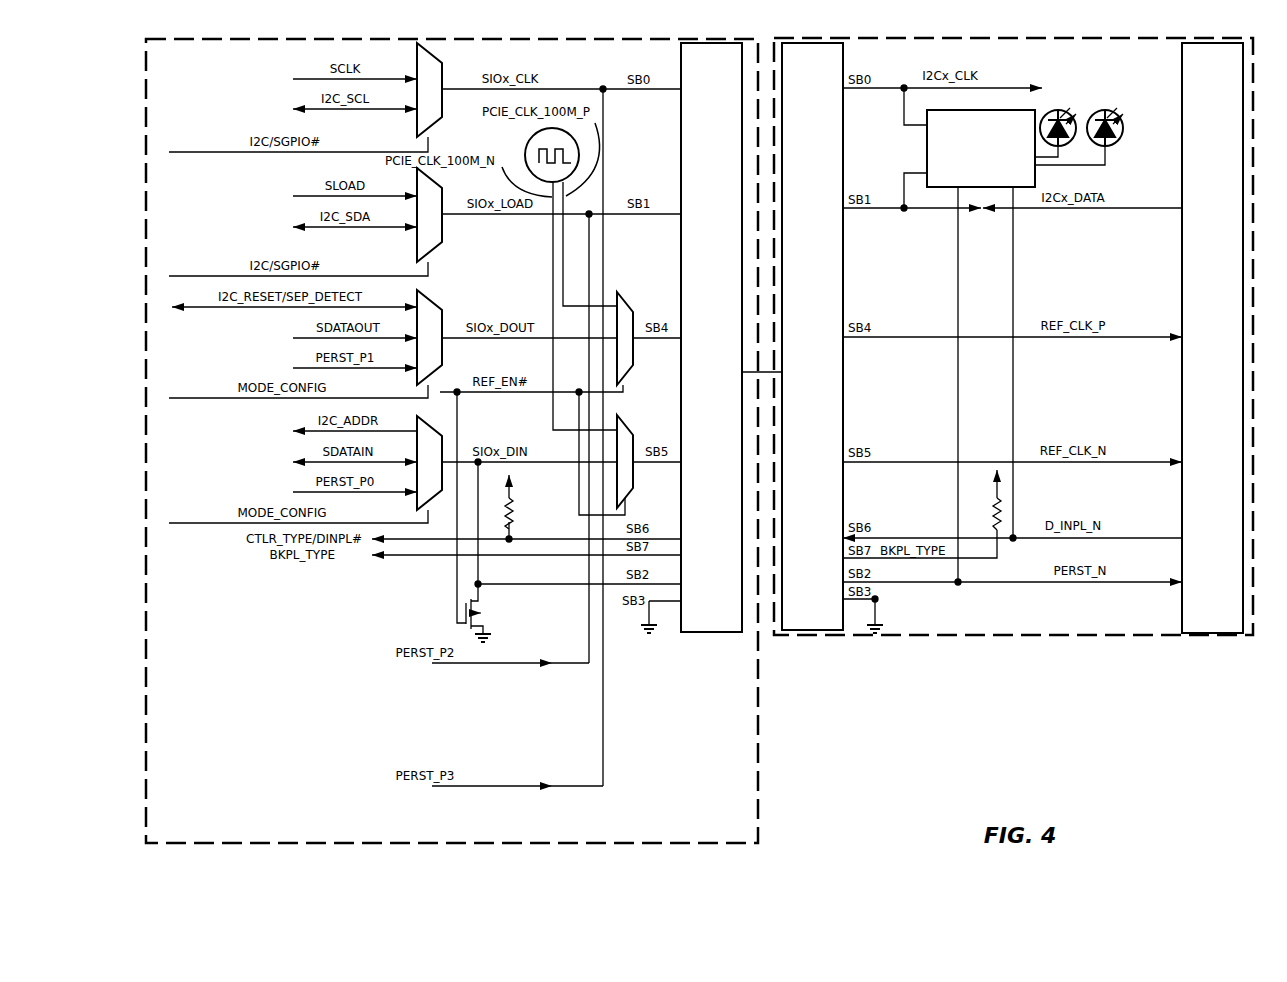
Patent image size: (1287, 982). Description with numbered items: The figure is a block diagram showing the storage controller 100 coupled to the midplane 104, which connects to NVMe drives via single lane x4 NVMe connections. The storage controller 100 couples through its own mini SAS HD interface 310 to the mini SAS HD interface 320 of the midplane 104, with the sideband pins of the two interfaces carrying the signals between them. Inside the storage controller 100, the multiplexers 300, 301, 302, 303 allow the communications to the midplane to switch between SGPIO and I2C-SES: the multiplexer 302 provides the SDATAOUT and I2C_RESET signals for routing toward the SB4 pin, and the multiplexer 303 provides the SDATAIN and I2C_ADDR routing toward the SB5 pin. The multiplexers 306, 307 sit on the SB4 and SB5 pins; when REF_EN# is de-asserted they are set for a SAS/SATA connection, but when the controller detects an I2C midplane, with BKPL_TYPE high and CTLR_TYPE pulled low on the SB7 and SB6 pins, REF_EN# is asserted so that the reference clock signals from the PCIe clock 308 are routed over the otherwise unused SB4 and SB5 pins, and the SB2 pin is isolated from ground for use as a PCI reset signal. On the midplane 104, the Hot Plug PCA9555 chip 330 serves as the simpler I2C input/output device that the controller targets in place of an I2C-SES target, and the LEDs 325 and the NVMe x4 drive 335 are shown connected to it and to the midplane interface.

The storage controller 100 is at (452, 441).
The midplane 104 is at (1013, 336).
The multiplexer 300 is at (445, 84).
The multiplexer 301 is at (445, 207).
The multiplexer 302 is at (445, 308).
The multiplexer 303 is at (445, 436).
The multiplexer 306 is at (641, 315).
The multiplexer 307 is at (641, 438).
The PCIe clock 308 is at (525, 155).
The mini SAS HD interface 310 is at (711, 337).
The mini SAS HD interface 320 is at (812, 336).
The LEDs 325 is at (1093, 113).
The Hot Plug PCA9555 chip 330 is at (981, 148).
The NVMe X4 drive 335 is at (1212, 338).